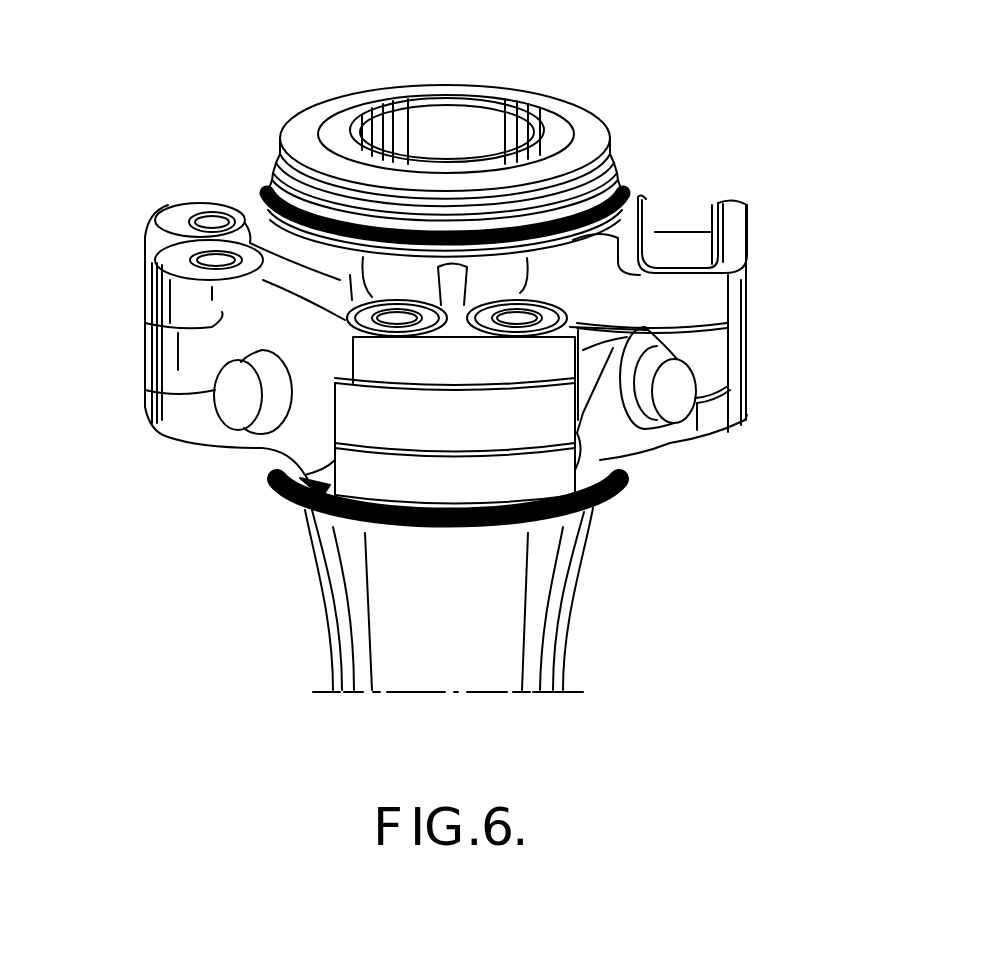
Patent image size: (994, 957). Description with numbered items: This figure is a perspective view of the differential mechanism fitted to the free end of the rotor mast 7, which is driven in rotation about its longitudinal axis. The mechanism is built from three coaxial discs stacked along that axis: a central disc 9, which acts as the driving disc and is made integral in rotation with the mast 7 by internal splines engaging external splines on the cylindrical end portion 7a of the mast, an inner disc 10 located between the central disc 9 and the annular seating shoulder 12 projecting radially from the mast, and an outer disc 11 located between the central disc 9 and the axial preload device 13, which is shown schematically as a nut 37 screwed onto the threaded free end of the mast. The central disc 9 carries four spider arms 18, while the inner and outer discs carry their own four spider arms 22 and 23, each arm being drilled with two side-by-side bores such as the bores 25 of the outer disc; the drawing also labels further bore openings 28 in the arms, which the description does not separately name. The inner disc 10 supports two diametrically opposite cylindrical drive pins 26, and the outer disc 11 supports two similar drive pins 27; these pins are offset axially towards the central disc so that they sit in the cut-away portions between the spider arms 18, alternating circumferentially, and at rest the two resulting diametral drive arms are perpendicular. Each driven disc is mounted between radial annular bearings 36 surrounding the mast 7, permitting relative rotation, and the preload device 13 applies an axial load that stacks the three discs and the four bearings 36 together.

The mast 7 is at (492, 665).
The cylindrical end portion 7a is at (528, 108).
The central disc 9 is at (213, 350).
The inner disc 10 is at (325, 468).
The outer disc 11 is at (246, 188).
The seating shoulder 12 is at (565, 520).
The axial preload device 13 is at (620, 140).
The spider arms 18 is at (188, 343).
The spider arms 22 is at (712, 418).
The spider arms 23 is at (182, 297).
The bores 25 is at (692, 253).
The drive pins 26 is at (668, 410).
The drive pins 27 is at (237, 398).
The bolt holes 28 is at (512, 306).
The radial annular bearings 36 is at (642, 183).
The nut 37 is at (592, 135).